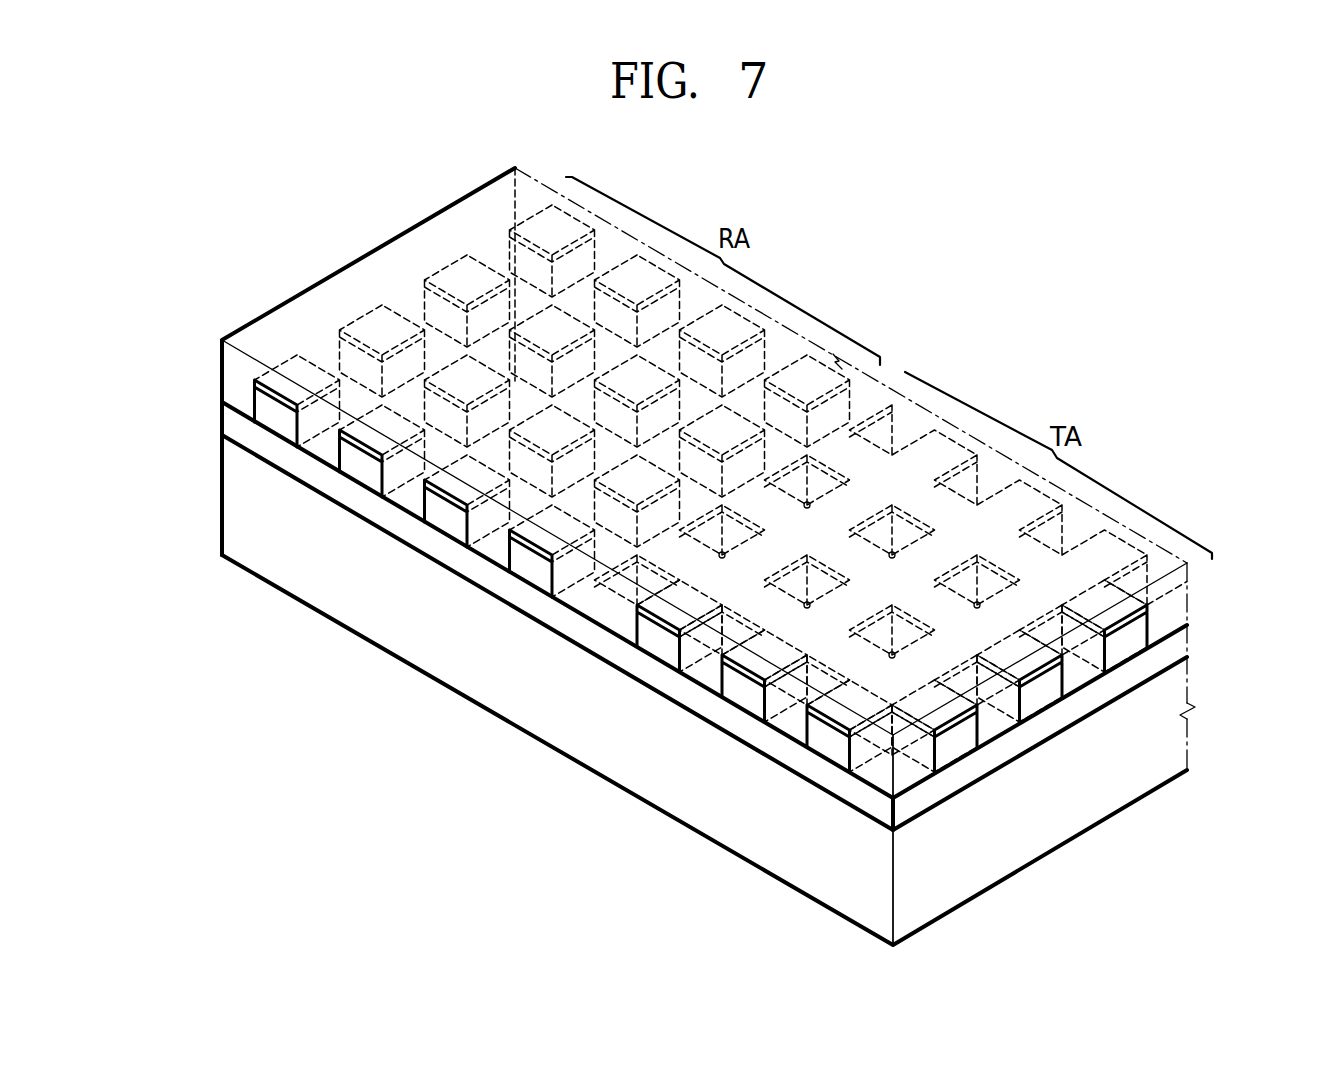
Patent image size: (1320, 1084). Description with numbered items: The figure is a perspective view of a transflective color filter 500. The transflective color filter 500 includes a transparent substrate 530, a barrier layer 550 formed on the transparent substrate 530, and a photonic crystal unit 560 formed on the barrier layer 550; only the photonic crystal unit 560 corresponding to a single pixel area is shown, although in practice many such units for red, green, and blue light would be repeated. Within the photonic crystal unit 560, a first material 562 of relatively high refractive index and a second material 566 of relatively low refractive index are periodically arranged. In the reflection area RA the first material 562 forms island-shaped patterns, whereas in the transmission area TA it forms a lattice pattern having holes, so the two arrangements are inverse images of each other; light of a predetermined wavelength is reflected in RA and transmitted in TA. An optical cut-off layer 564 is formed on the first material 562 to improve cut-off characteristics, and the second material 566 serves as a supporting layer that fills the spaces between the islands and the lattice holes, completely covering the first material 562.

The transflective color filter 500 is at (285, 245).
The transparent substrate 530 is at (222, 493).
The barrier layer 550 is at (222, 422).
The photonic crystal unit 560 is at (212, 345).
The first material 562 is at (447, 518).
The optical cut-off layer 564 is at (637, 617).
The second material 566 is at (1180, 597).